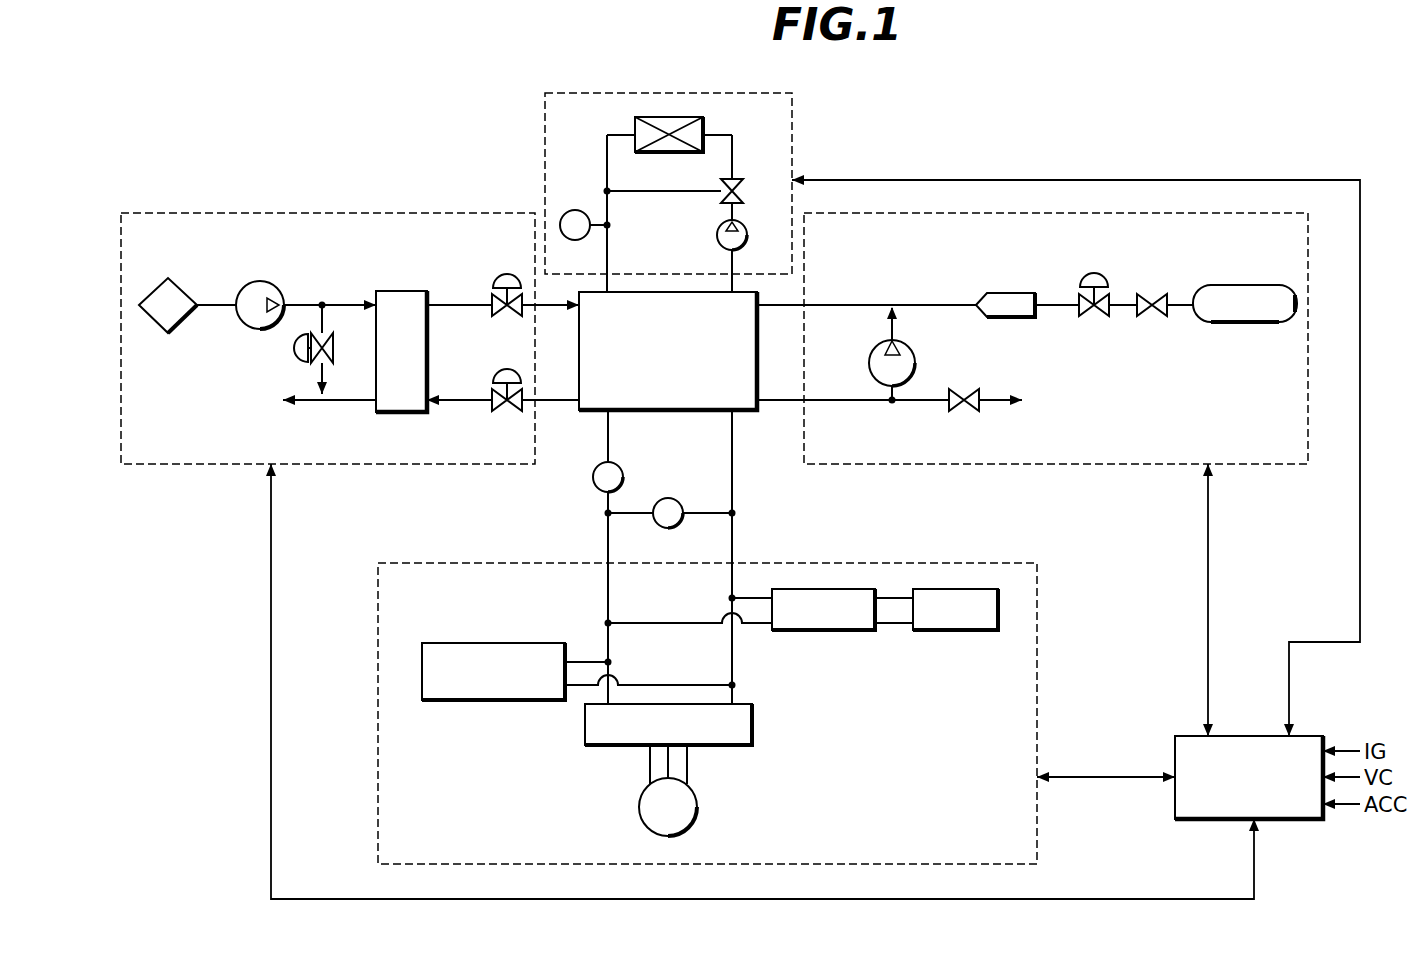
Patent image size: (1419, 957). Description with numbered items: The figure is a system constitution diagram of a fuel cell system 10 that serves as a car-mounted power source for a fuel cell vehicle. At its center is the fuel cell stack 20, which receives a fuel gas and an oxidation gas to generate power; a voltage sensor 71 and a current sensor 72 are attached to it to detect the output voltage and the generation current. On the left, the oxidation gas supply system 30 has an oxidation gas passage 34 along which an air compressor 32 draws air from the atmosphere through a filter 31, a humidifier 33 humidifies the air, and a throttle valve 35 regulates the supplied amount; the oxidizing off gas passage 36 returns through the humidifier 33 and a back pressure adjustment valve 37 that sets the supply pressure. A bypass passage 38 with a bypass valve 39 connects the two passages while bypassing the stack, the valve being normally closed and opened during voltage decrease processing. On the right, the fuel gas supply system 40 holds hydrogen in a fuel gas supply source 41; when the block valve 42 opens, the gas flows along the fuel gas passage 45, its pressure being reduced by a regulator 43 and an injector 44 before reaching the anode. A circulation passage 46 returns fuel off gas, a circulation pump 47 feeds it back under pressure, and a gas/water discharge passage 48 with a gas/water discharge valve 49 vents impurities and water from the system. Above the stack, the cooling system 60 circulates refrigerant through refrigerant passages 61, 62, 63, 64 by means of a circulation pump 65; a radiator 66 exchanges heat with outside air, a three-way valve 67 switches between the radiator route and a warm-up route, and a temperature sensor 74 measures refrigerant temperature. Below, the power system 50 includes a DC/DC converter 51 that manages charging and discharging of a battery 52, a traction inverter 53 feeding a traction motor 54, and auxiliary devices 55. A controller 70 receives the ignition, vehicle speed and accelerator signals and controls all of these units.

The fuel cell system 10 is at (1065, 113).
The fuel cell stack 20 is at (740, 412).
The oxidation gas supply system 30 is at (323, 212).
The filter 31 is at (172, 290).
The air compressor 32 is at (258, 282).
The humidifier 33 is at (396, 290).
The oxidation gas passage 34 is at (445, 304).
The throttle valve 35 is at (508, 275).
The oxidizing off gas passage 36 is at (446, 400).
The back pressure adjustment valve 37 is at (507, 370).
The bypass passage 38 is at (321, 318).
The bypass valve 39 is at (296, 360).
The fuel gas supply system 40 is at (1245, 464).
The fuel gas supply source 41 is at (1240, 285).
The block valve 42 is at (1158, 295).
The regulator 43 is at (1098, 275).
The injector 44 is at (1006, 292).
The fuel gas passage 45 is at (826, 304).
The circulation passage 46 is at (822, 400).
The circulation pump 47 is at (915, 356).
The gas/water discharge passage 48 is at (992, 399).
The gas/water discharge valve 49 is at (962, 412).
The power system 50 is at (1040, 600).
The DC/DC converter 51 is at (822, 632).
The battery 52 is at (946, 632).
The traction inverter 53 is at (754, 728).
The traction motor 54 is at (698, 805).
The auxiliary devices 55 is at (514, 642).
The cooling system 60 is at (792, 105).
The refrigerant passage 61 is at (736, 262).
The refrigerant passage 62 is at (697, 193).
The refrigerant passage 63 is at (609, 240).
The refrigerant passage 64 is at (722, 134).
The circulation pump 65 is at (745, 222).
The radiator 66 is at (674, 153).
The three-way valve 67 is at (736, 178).
The controller 70 is at (1306, 735).
The voltage sensor 71 is at (683, 525).
The current sensor 72 is at (596, 492).
The temperature sensor 74 is at (578, 210).